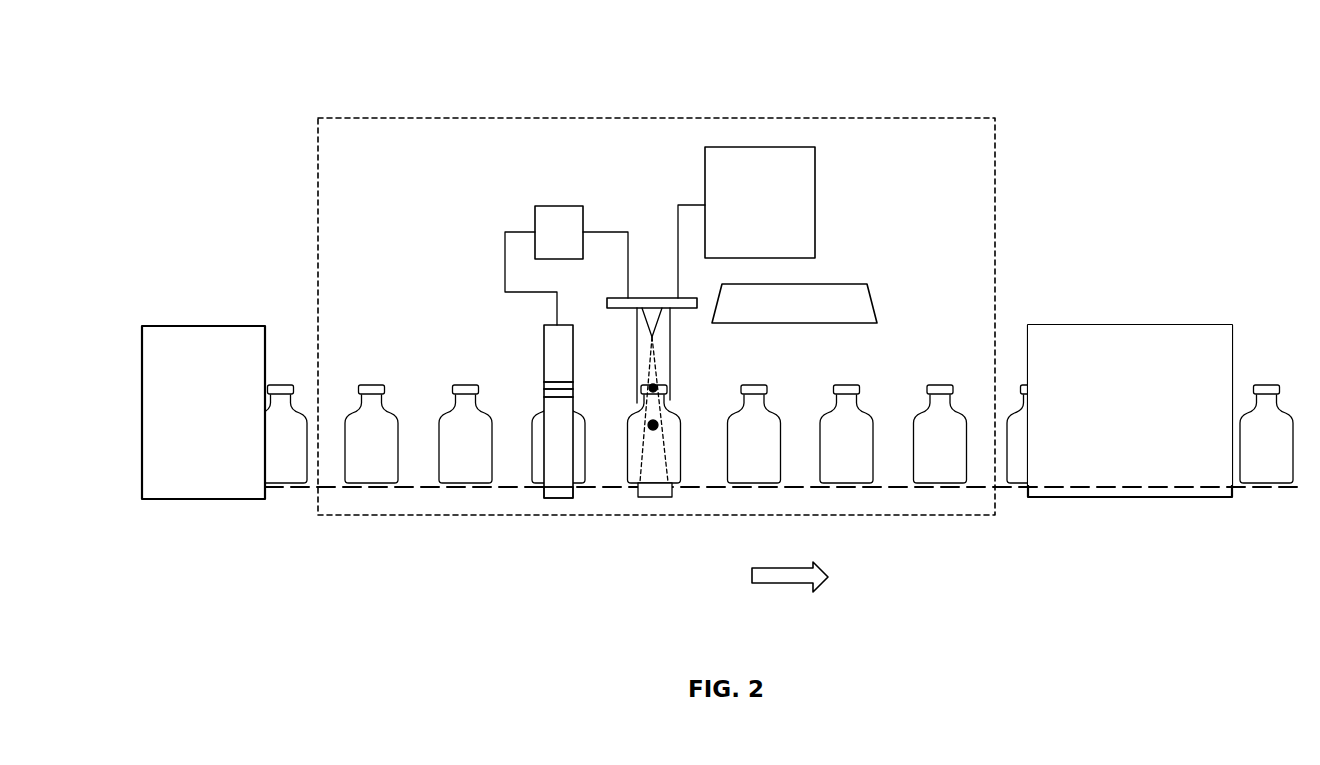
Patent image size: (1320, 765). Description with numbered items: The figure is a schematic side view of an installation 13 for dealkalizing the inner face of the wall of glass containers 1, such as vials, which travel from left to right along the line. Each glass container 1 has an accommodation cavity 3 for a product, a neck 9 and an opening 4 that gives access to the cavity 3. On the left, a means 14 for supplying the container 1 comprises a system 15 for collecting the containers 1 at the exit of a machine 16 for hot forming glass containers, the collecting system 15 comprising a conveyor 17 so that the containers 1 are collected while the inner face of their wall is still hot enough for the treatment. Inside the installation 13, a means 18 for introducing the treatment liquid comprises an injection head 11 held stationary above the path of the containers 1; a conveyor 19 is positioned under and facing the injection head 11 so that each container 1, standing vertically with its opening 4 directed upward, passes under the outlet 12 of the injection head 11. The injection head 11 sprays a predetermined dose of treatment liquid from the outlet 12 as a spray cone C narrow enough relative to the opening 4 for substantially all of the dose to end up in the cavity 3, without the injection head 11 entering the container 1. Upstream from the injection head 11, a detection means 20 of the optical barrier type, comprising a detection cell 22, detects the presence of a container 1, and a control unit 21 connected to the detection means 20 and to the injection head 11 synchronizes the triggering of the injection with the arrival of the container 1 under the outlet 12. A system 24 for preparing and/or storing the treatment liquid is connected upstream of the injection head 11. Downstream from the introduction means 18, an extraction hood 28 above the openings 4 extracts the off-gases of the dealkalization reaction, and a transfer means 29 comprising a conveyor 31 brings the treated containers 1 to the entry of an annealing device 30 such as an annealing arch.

The glass container 1 is at (394, 401).
The accommodation cavity 3 is at (659, 425).
The opening 4 is at (662, 384).
The neck 9 is at (565, 382).
The injection head 11 is at (652, 335).
The outlet 12 is at (658, 330).
The installation 13 is at (372, 116).
The means for supplying the container 14 is at (405, 504).
The collecting system 15 is at (348, 496).
The forming machine 16 is at (203, 412).
The conveyor 17 is at (367, 488).
The means for introducing the treatment liquid 18 is at (637, 236).
The conveyor 19 is at (645, 498).
The detection means 20 is at (548, 504).
The control unit 21 is at (566, 265).
The detection cell 22 is at (563, 397).
The system for preparing and/or storing the treatment liquid 24 is at (746, 222).
The extraction hood 28 is at (846, 282).
The transfer means 29 is at (957, 506).
The annealing device 30 is at (1130, 411).
The conveyor 31 is at (975, 488).
The spray cone C is at (641, 434).